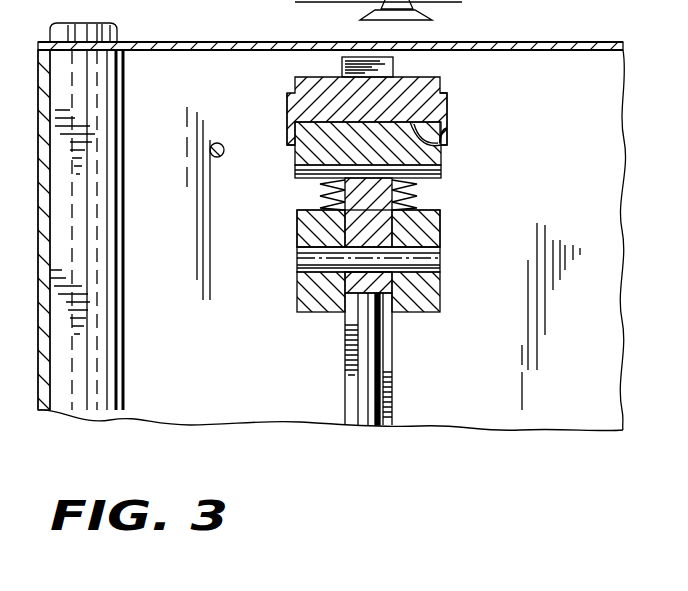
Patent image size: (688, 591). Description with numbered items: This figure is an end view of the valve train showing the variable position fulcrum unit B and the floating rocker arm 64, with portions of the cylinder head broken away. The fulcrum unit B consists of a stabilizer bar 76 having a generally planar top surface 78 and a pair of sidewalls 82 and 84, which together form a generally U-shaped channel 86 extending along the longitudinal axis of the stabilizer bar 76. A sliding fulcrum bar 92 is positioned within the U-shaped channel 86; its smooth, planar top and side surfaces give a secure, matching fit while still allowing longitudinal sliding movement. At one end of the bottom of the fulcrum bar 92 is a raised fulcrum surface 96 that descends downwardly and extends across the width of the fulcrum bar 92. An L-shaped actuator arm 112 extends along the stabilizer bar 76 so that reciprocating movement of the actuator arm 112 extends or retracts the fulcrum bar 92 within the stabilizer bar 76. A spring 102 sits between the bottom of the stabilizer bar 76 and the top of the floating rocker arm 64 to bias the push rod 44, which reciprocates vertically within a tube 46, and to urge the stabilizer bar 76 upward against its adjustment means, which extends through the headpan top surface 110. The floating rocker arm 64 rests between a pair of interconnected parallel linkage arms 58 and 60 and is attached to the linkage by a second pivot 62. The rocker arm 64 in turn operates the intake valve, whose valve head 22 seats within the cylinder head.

The valve head 22 is at (414, 21).
The headpan top surface 110 is at (553, 42).
The actuator arm 112 is at (211, 147).
The top surface 78 is at (445, 75).
The stabilizer bar 76 is at (376, 112).
The sidewall 84 is at (287, 132).
The sidewall 82 is at (448, 127).
The U-shaped channel 86 is at (444, 143).
The sliding fulcrum bar 92 is at (376, 157).
The raised fulcrum surface 96 is at (443, 173).
The spring 102 is at (323, 182).
The floating rocker arm 64 is at (382, 231).
The second pivot 62 is at (418, 257).
The linkage arm 58 is at (325, 293).
The linkage arm 60 is at (425, 287).
The push rod 44 is at (371, 354).
The tube 46 is at (397, 407).
The variable position fulcrum unit B is at (458, 90).